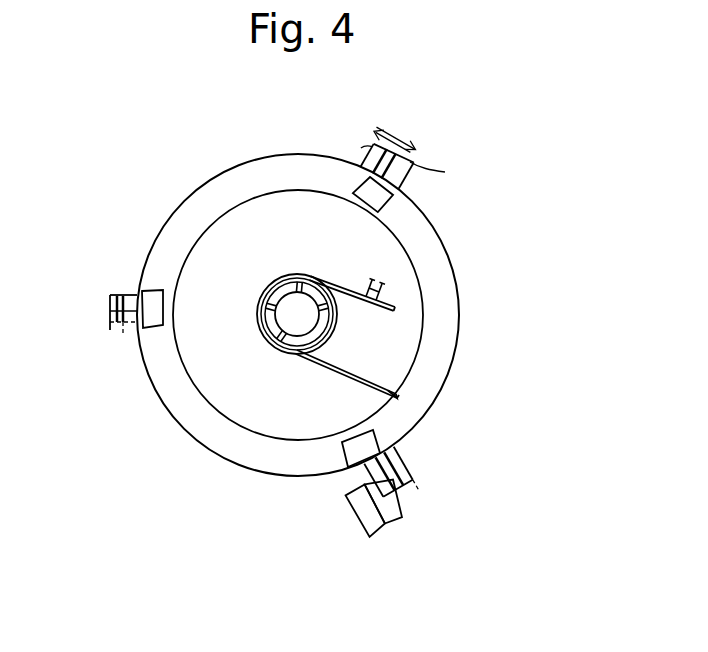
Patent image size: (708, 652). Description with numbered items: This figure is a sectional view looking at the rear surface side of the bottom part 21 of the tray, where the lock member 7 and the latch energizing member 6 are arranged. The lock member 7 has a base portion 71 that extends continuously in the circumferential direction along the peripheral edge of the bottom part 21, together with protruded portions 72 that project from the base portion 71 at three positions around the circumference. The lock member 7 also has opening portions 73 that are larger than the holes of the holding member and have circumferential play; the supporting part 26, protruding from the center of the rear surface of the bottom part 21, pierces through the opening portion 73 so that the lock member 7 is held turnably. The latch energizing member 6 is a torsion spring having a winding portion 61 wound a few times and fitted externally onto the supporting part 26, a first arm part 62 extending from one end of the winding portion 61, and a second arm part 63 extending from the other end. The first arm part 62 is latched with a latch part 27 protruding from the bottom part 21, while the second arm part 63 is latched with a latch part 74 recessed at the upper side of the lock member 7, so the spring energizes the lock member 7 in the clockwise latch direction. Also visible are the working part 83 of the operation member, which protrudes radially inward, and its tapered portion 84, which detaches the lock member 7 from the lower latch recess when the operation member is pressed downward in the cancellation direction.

The lock member 7 is at (215, 170).
The latch energizing member 6 is at (258, 313).
The winding portion 61 is at (270, 288).
The first arm part 62 is at (346, 288).
The second arm part 63 is at (333, 368).
The supporting part 26 is at (262, 347).
The latch part 27 is at (380, 283).
The bottom part 21 is at (397, 343).
The base portion 71 is at (160, 367).
The protruded portions 72 is at (403, 183).
The opening portions 73 is at (153, 322).
The latch part 74 is at (398, 395).
The working part 83 is at (363, 512).
The tapered portion 84 is at (380, 505).